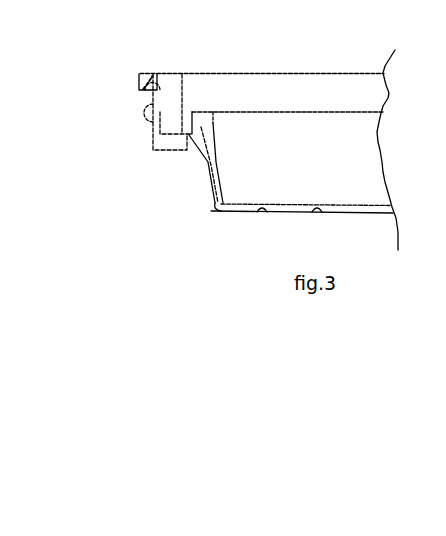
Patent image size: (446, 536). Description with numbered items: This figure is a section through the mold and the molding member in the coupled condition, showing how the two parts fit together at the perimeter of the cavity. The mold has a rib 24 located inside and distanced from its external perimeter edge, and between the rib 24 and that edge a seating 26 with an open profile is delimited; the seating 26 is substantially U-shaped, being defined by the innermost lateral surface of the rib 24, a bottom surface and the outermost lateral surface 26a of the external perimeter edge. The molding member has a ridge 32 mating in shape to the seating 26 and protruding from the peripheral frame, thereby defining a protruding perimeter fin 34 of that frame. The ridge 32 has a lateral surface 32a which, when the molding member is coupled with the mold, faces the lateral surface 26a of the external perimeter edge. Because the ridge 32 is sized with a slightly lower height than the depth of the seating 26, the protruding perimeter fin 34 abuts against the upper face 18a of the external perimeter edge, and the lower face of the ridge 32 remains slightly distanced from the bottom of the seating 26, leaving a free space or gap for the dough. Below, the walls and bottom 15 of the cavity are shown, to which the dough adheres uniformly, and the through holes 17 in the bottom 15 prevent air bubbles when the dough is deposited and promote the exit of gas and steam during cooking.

The bottom 15 is at (368, 207).
The through holes 17 is at (317, 202).
The upper face 18a is at (143, 89).
The rib 24 is at (213, 118).
The seating 26 is at (172, 134).
The lateral surface 26a is at (153, 122).
The ridge 32 is at (178, 103).
The lateral surface 32a is at (166, 105).
The protruding perimeter fin 34 is at (139, 68).